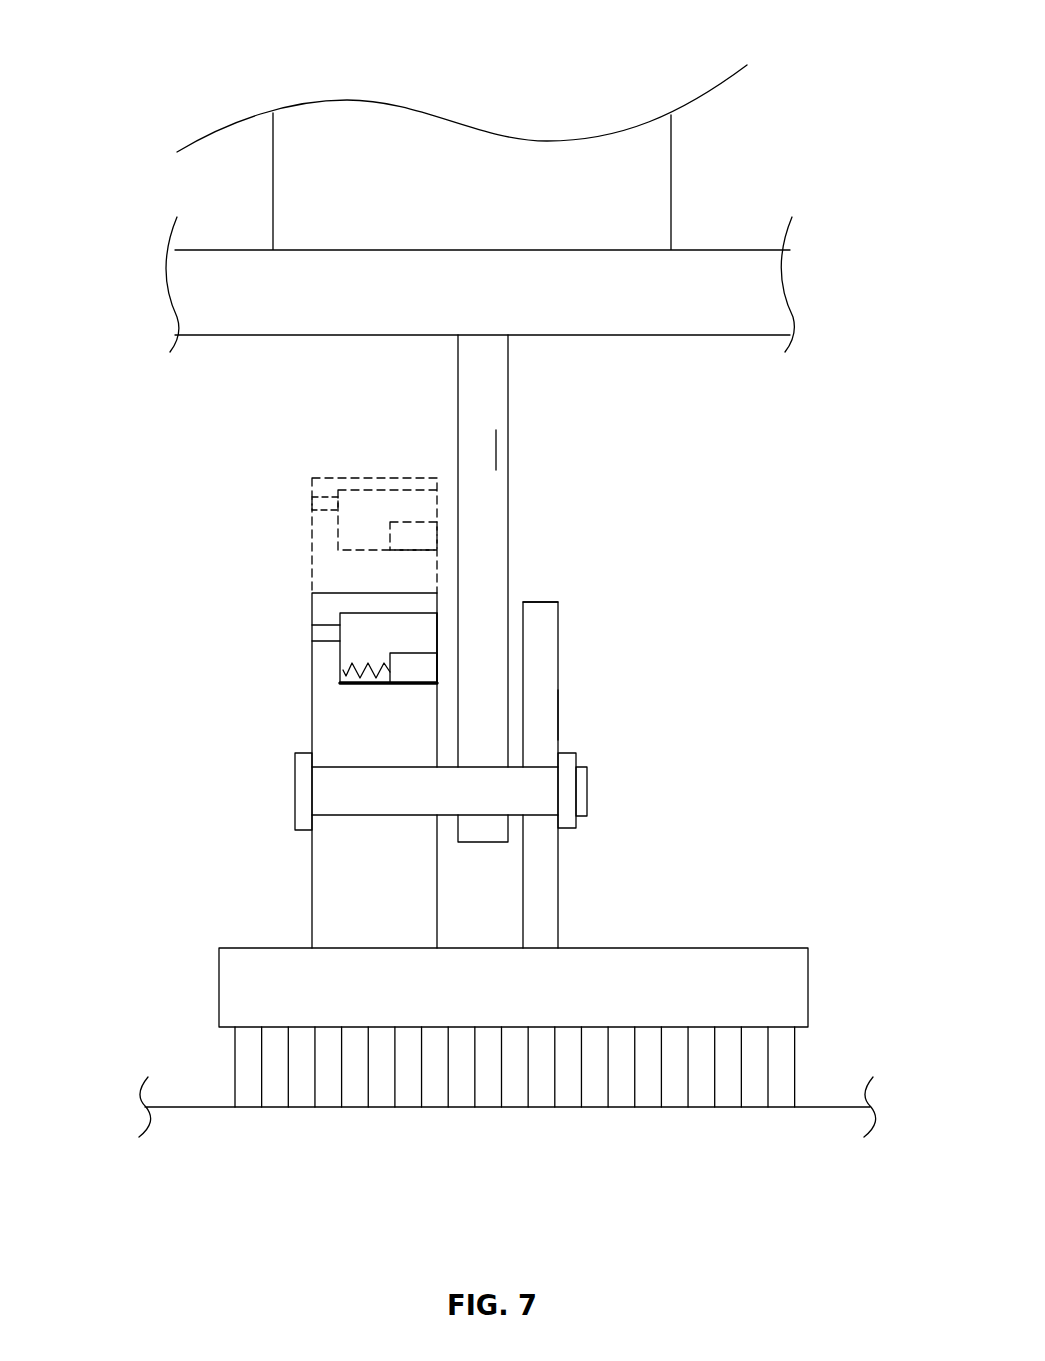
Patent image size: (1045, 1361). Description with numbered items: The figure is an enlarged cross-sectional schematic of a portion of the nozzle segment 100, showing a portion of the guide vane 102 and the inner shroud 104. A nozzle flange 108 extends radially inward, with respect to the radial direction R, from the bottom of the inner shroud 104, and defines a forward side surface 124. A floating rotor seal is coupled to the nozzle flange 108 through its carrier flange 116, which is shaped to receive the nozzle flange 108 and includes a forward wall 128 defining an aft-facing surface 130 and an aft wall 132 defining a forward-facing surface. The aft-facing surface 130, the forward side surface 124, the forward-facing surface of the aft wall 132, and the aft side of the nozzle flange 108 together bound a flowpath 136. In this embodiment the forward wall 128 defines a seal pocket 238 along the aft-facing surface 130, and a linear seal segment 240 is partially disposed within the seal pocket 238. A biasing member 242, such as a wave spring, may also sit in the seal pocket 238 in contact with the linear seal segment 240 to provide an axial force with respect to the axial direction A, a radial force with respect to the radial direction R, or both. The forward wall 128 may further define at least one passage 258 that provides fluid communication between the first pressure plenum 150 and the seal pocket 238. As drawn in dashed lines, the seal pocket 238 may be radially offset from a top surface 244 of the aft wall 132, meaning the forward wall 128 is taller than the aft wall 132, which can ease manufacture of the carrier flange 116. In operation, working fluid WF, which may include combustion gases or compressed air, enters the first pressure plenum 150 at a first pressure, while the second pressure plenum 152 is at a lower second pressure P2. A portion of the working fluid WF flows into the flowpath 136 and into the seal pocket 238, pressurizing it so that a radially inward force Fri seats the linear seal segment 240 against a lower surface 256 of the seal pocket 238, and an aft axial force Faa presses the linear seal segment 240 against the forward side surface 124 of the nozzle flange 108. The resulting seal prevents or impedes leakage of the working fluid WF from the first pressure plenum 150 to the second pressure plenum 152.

The nozzle segment 100 is at (793, 118).
The guide vane 102 is at (490, 194).
The inner shroud 104 is at (705, 303).
The nozzle flange 108 is at (500, 450).
The carrier flange 116 is at (564, 715).
The forward side surface 124 is at (446, 352).
The forward wall 128 is at (343, 885).
The aft-facing surface 130 is at (437, 927).
The aft wall 132 is at (548, 678).
The flowpath 136 is at (447, 638).
The first pressure plenum 150 is at (290, 406).
The second pressure plenum 152 is at (683, 406).
The seal pocket 238 is at (352, 613).
The linear seal segment 240 is at (443, 684).
The biasing member 242 is at (366, 684).
The top surface 244 is at (543, 601).
The lower surface 256 is at (338, 677).
The passage 258 is at (322, 641).
The working fluid WF is at (447, 508).
The second pressure P2 is at (690, 471).
The radially inward force Fri is at (397, 651).
The aft axial force Faa is at (388, 656).
The radial direction R is at (832, 730).
The axial direction A is at (735, 1216).